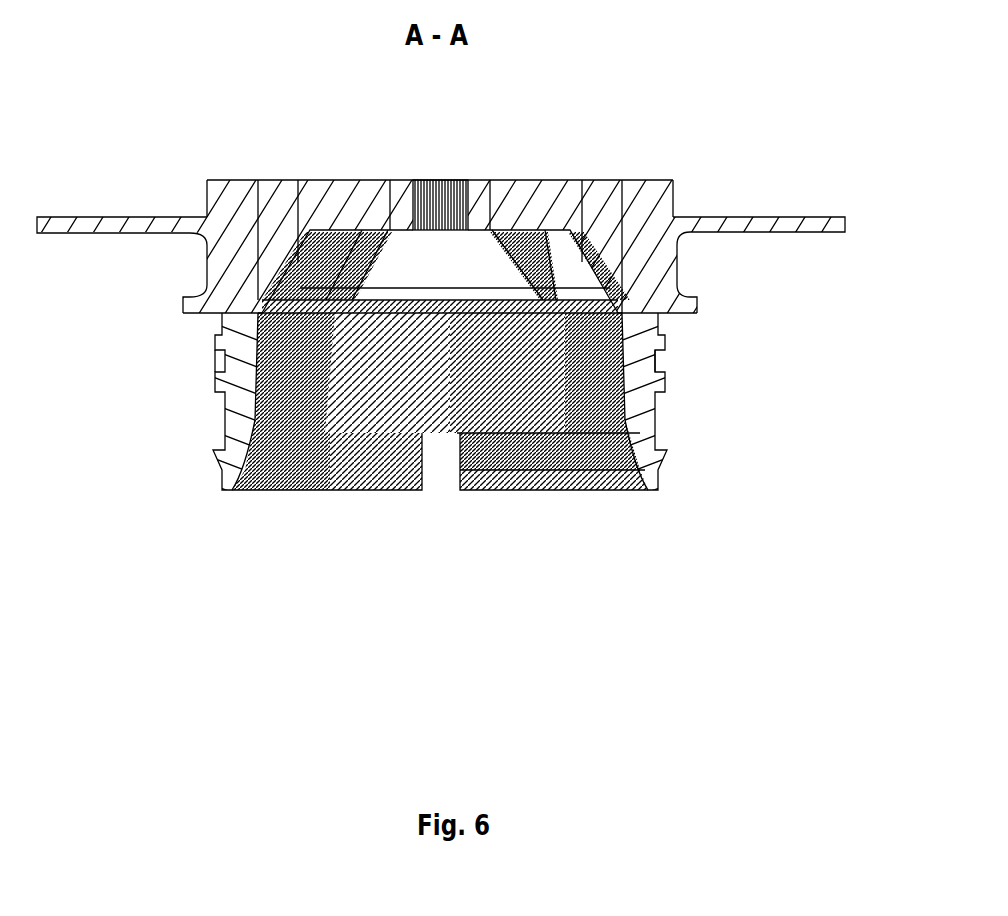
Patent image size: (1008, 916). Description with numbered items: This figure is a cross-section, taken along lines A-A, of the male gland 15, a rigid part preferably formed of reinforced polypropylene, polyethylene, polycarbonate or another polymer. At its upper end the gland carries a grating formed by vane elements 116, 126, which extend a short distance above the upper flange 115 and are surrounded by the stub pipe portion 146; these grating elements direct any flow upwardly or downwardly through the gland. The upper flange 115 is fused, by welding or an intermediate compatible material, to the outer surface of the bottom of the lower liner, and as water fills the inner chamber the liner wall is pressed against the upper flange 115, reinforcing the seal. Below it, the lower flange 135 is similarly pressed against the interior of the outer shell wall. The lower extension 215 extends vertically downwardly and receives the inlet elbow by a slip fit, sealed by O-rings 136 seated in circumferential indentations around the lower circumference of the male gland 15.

The stub pipe portion 146 is at (685, 180).
The upper flange 115 is at (768, 215).
The lower flange 135 is at (700, 303).
The vane element 126 is at (460, 180).
The vane element 116 is at (488, 312).
The O-rings 136 is at (233, 357).
The male gland 15 is at (219, 406).
The lower extension 215 is at (503, 490).